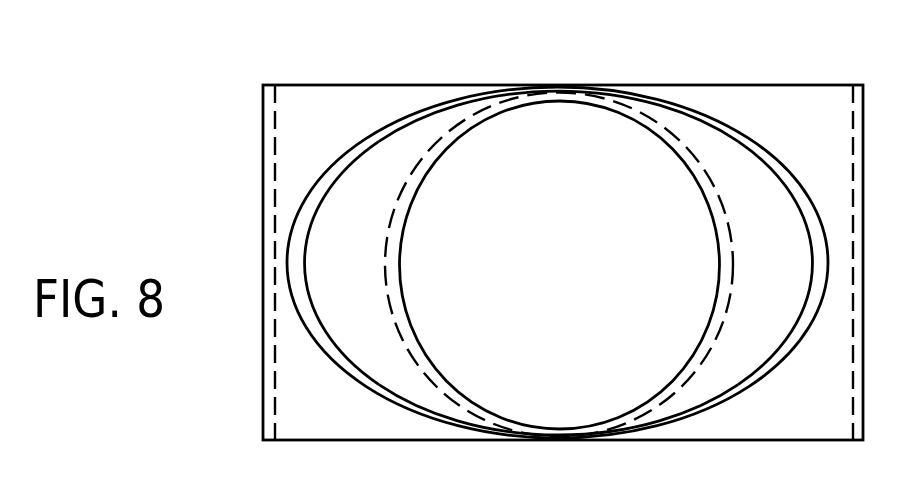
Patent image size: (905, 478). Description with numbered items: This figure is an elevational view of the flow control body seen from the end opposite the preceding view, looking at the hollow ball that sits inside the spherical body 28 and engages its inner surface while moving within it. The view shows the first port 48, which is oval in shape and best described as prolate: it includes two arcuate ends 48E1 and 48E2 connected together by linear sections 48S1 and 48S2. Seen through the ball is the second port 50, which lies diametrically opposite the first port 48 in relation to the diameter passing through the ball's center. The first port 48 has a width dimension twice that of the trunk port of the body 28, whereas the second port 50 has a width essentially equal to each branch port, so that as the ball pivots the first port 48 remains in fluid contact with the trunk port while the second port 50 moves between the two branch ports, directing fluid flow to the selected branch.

The body 28 is at (256, 409).
The first port 48 is at (557, 233).
The arcuate end 48E1 is at (305, 267).
The arcuate end 48E2 is at (810, 232).
The linear section 48S1 is at (560, 102).
The linear section 48S2 is at (553, 427).
The second port 50 is at (477, 125).